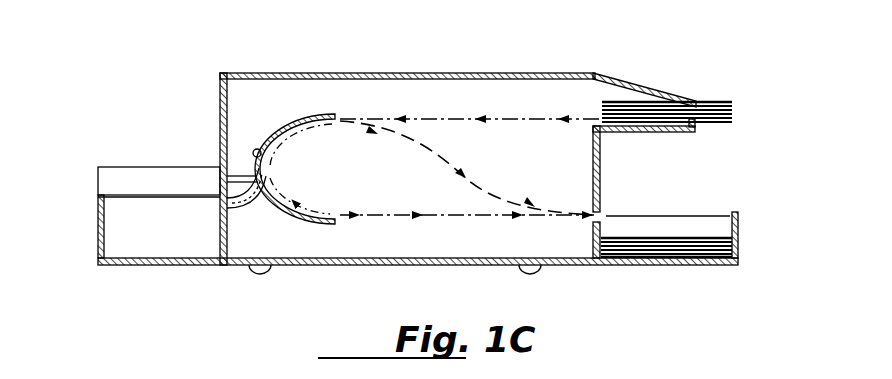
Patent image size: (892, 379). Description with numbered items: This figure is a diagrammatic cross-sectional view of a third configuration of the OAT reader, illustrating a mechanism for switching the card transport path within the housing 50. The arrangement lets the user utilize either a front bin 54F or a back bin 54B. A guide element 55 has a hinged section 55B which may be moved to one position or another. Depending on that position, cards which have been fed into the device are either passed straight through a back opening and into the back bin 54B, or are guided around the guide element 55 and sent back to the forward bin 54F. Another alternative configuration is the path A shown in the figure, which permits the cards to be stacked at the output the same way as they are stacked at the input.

The housing 50 is at (362, 73).
The back bin 54B is at (98, 232).
The front bin 54F is at (737, 232).
The guide element 55 is at (289, 131).
The hinged section 55B is at (262, 168).
The path A is at (482, 170).